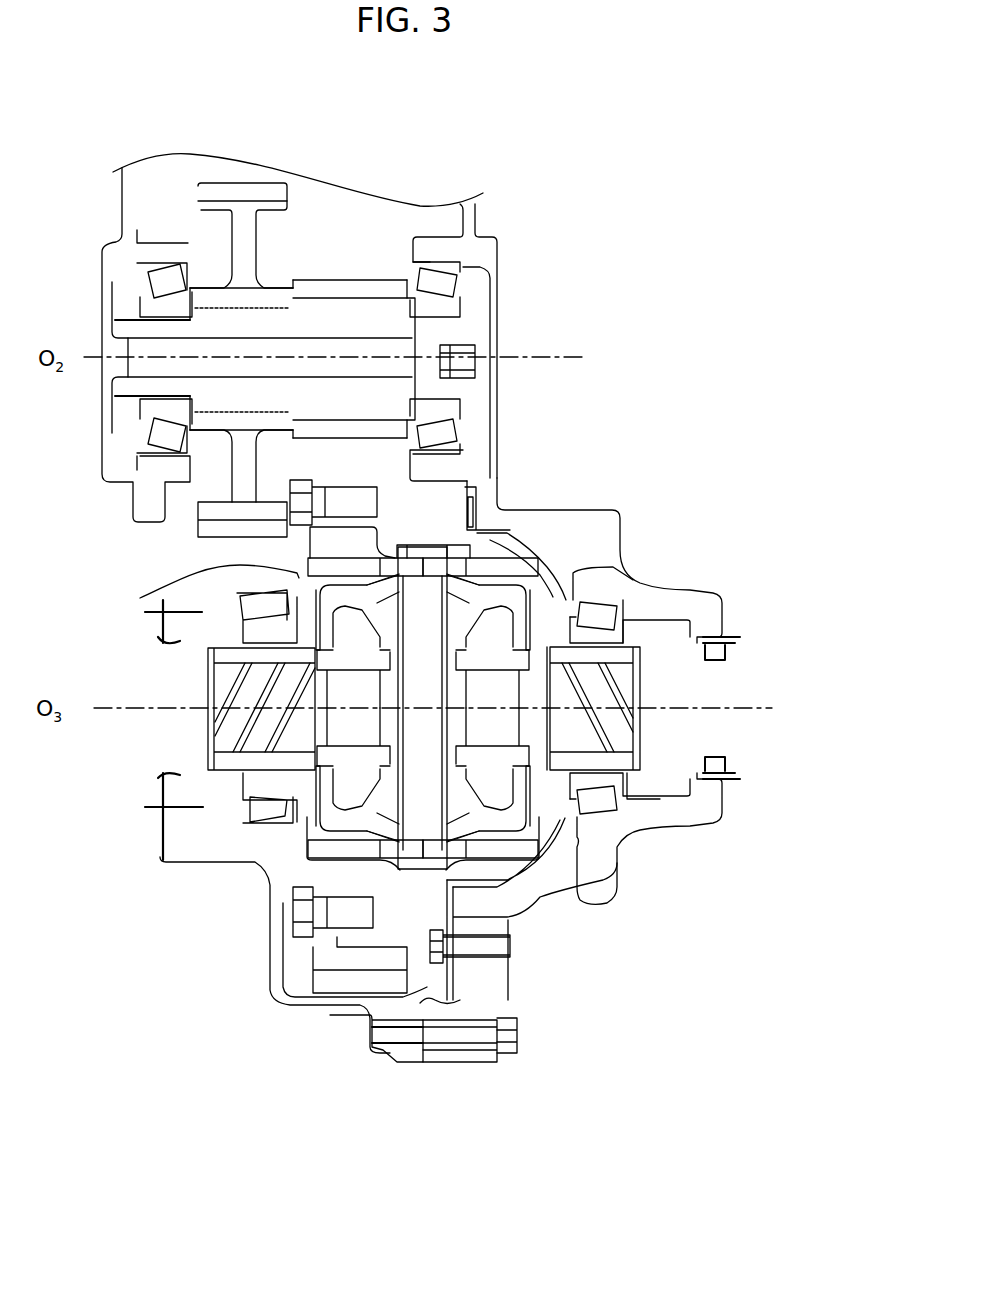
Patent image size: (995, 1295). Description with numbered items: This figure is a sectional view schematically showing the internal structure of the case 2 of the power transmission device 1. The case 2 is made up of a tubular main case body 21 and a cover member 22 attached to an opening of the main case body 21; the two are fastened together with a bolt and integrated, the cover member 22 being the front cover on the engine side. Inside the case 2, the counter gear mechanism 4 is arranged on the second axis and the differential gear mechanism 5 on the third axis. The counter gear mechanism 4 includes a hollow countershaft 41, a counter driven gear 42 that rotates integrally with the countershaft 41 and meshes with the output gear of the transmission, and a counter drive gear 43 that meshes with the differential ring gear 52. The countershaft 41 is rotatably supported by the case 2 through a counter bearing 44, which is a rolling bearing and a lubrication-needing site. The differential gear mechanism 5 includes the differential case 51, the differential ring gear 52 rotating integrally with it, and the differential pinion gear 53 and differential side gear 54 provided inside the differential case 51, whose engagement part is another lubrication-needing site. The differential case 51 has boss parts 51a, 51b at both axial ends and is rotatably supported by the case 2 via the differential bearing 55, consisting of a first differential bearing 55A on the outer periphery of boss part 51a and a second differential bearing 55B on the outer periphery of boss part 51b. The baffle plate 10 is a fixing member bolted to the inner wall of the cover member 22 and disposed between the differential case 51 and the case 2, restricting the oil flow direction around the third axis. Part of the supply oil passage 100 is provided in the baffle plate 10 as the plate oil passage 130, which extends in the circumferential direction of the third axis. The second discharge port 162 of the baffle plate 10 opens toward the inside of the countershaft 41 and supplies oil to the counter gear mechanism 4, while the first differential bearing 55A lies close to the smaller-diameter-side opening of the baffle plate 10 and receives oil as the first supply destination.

The power transmission device 1 is at (592, 144).
The case 2 is at (423, 1098).
The main case body 21 is at (407, 1064).
The cover member 22 is at (470, 1064).
The counter gear mechanism 4 is at (325, 328).
The countershaft 41 is at (447, 327).
The counter driven gear 42 is at (247, 183).
The counter drive gear 43 is at (352, 285).
The counter bearing 44 is at (165, 280).
The second discharge port 162 is at (440, 352).
The differential gear mechanism 5 is at (412, 799).
The differential case 51 is at (530, 590).
The boss part 51a is at (633, 650).
The boss part 51b is at (230, 767).
The differential ring gear 52 is at (410, 470).
The differential pinion gear 53 is at (387, 837).
The differential side gear 54 is at (328, 800).
The differential bearing 55 is at (412, 700).
The first differential bearing 55A is at (593, 620).
The second differential bearing 55B is at (272, 820).
The supply oil passage 100 is at (473, 500).
The plate oil passage 130 is at (543, 493).
The baffle plate 10 is at (543, 872).